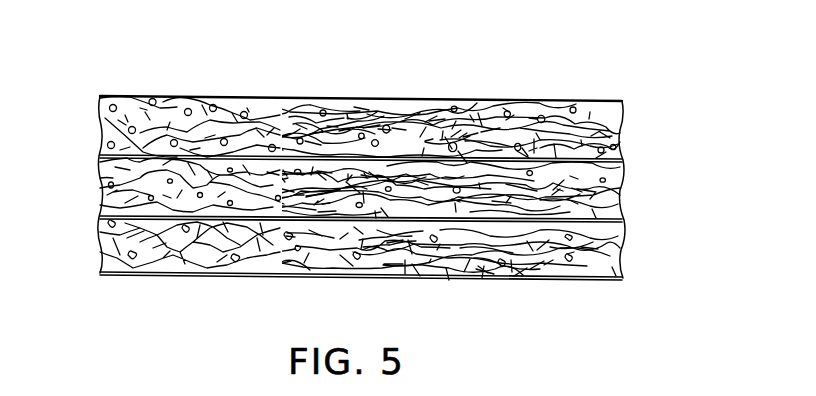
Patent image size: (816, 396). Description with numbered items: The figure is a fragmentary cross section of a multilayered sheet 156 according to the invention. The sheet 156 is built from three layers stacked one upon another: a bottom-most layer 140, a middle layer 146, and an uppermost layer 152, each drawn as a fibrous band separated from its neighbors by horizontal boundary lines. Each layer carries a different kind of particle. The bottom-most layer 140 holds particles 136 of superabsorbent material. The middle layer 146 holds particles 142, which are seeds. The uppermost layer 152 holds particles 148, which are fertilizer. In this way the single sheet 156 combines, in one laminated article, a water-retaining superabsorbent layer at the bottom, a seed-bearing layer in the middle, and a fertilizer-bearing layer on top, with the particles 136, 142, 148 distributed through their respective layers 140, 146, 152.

The sheet 156 is at (271, 66).
The uppermost layer 152 is at (622, 125).
The fertilizer particles 148 is at (151, 97).
The middle layer 146 is at (620, 195).
The seed particles 142 is at (107, 187).
The bottom-most layer 140 is at (622, 258).
The superabsorbent particles 136 is at (572, 279).